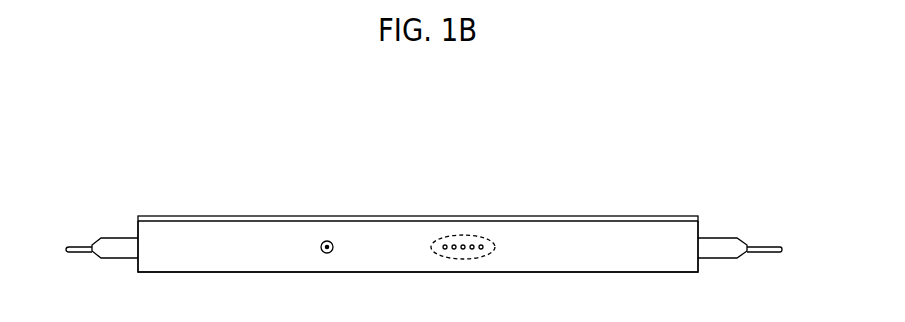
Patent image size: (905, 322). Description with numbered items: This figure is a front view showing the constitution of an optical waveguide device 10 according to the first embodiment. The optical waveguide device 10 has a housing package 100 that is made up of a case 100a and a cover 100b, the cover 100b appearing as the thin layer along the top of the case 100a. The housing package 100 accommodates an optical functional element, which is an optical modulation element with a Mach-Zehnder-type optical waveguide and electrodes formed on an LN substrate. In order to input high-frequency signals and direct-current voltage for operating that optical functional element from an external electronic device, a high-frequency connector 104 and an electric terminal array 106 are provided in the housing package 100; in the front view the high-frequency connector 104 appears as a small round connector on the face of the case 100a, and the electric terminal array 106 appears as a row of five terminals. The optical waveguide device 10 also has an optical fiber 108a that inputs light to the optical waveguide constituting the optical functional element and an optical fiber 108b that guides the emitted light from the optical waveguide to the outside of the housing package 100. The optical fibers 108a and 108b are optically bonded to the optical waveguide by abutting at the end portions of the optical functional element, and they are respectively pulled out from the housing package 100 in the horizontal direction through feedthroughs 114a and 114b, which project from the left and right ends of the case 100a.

The optical waveguide device 10 is at (227, 195).
The housing package 100 is at (633, 150).
The case 100a is at (520, 242).
The cover 100b is at (493, 216).
The high-frequency connector 104 is at (325, 241).
The electric terminal array 106 is at (450, 237).
The optical fiber 108a is at (72, 245).
The optical fiber 108b is at (775, 245).
The feedthrough 114a is at (115, 240).
The feedthrough 114b is at (730, 247).